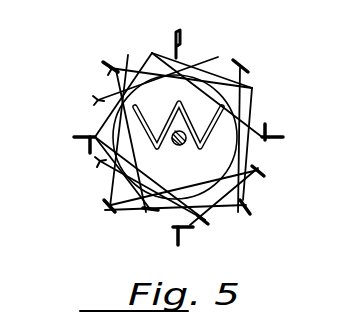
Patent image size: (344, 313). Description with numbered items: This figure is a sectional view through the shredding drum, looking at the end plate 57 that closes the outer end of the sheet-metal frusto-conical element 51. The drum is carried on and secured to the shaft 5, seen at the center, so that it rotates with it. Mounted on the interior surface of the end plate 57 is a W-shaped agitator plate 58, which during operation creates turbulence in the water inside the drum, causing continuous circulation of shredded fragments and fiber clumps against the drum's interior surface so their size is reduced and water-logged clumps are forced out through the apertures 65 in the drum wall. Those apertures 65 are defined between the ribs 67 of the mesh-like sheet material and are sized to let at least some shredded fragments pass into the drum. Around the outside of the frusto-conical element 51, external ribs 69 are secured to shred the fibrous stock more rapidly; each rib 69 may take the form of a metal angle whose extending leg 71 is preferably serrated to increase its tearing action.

The shaft 5 is at (178, 146).
The frusto-conical element 51 is at (252, 88).
The end plate 57 is at (226, 134).
The agitator plate 58 is at (152, 143).
The apertures 65 is at (255, 150).
The ribs 67 is at (168, 212).
The external ribs 69 is at (175, 76).
The extending leg 71 is at (183, 23).